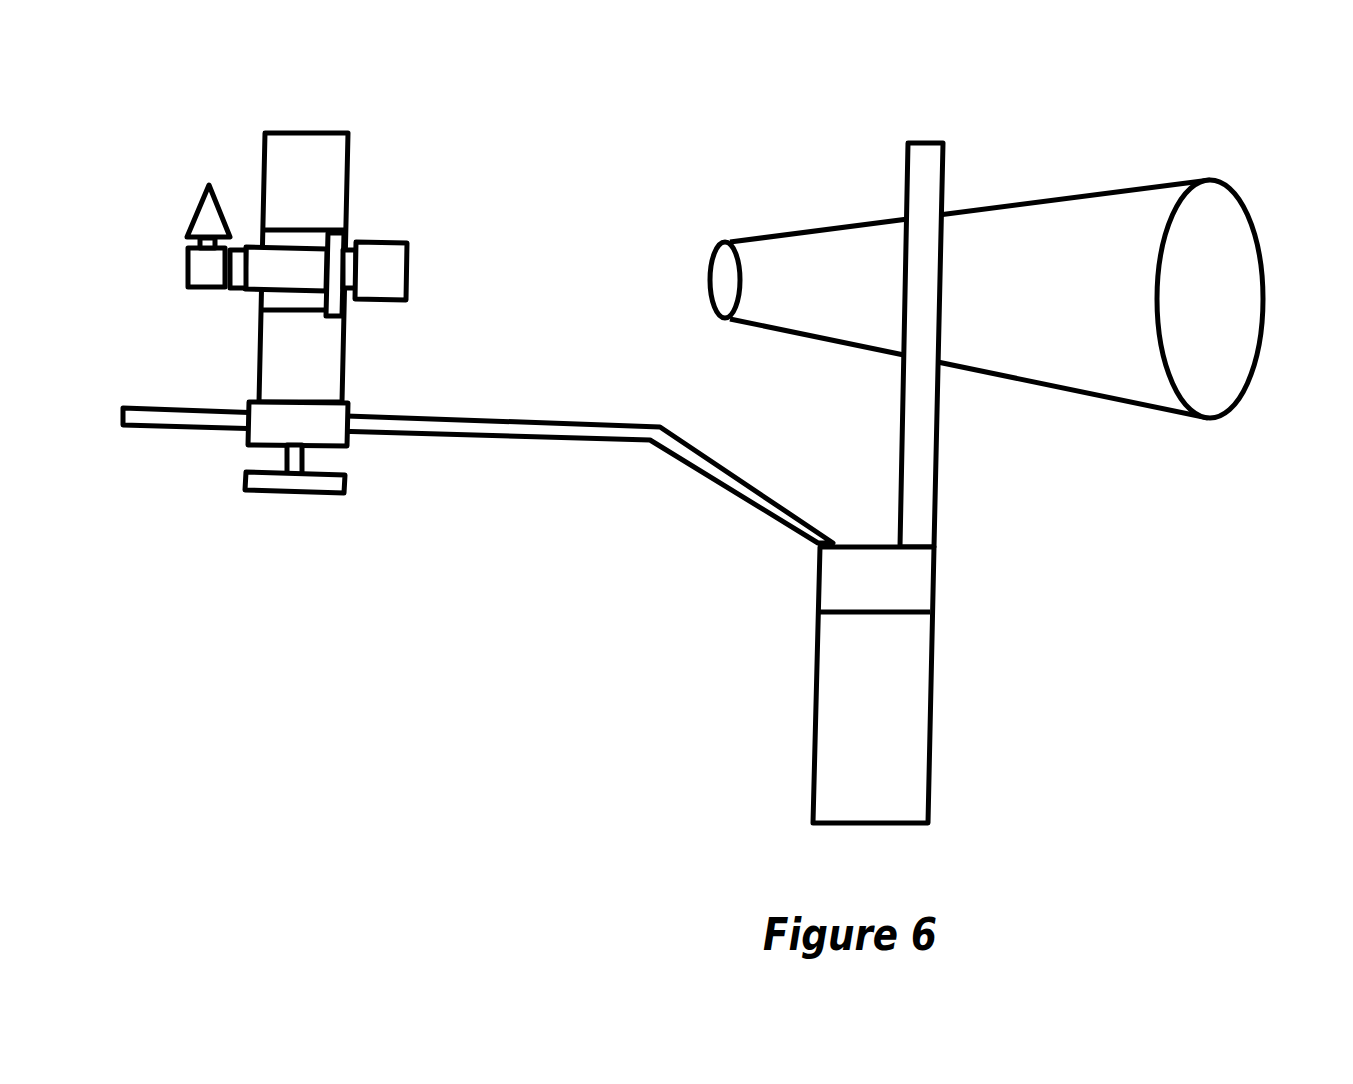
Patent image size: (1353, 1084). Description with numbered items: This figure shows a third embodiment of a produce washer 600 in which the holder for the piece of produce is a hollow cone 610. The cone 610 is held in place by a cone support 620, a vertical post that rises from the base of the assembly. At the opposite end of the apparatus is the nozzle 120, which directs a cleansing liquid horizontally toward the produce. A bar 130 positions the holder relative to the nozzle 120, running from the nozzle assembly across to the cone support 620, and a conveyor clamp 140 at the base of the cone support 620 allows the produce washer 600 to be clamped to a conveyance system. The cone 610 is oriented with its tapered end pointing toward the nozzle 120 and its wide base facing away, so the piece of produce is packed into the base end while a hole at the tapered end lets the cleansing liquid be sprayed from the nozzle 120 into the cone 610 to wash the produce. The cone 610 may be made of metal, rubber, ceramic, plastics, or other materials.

The produce washer 600 is at (693, 478).
The nozzle 120 is at (479, 311).
The bar 130 is at (478, 657).
The conveyor clamp 140 is at (982, 717).
The hollow cone 610 is at (986, 393).
The cone support 620 is at (1023, 412).